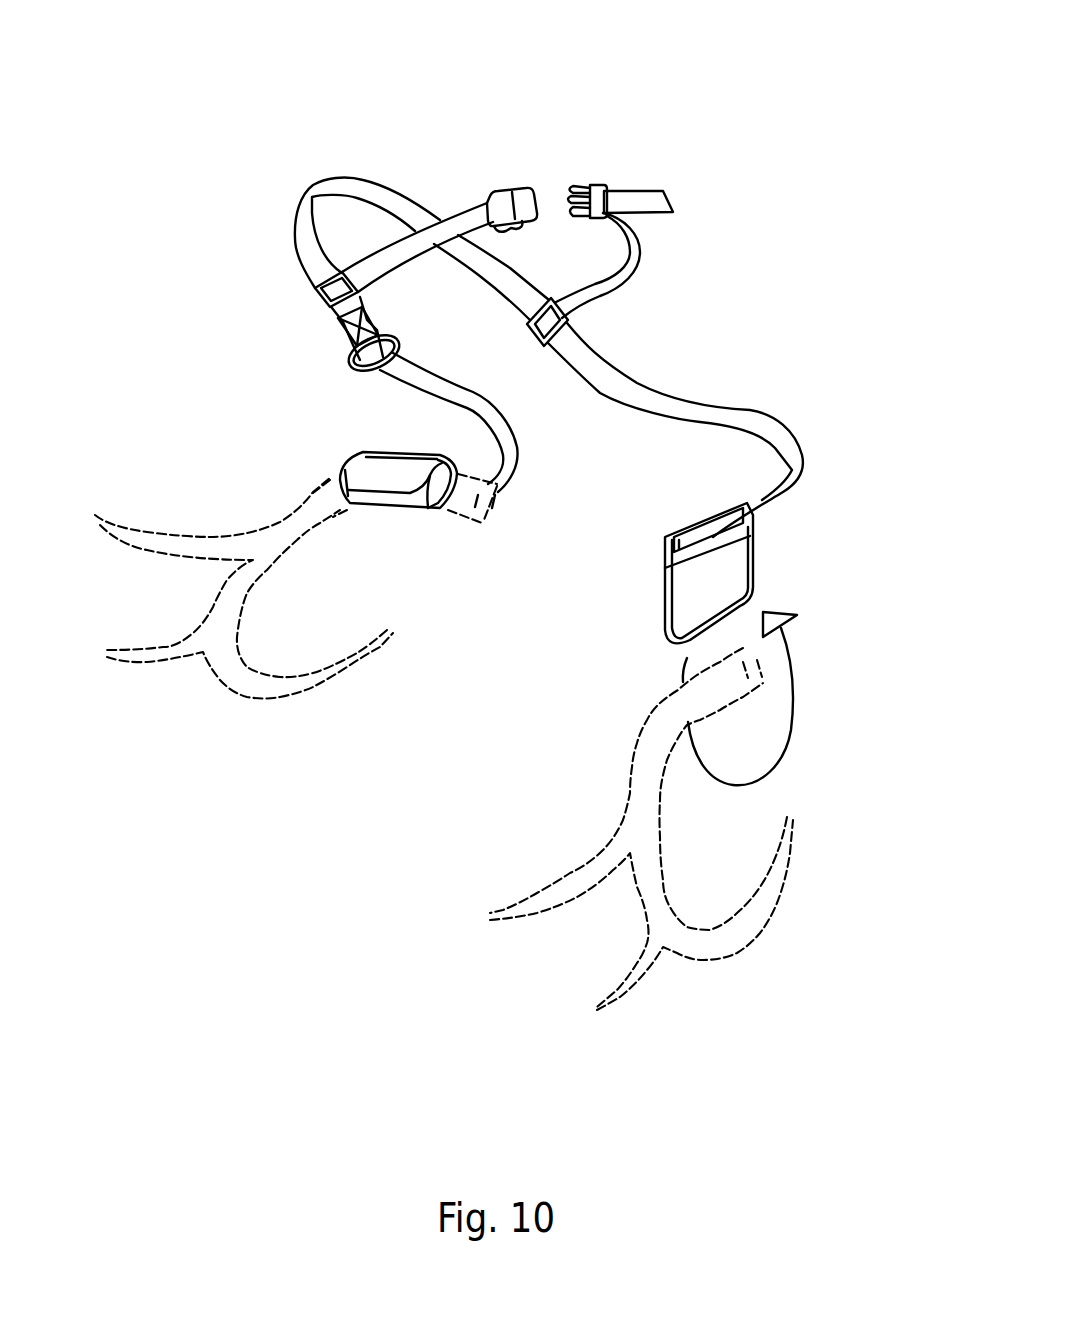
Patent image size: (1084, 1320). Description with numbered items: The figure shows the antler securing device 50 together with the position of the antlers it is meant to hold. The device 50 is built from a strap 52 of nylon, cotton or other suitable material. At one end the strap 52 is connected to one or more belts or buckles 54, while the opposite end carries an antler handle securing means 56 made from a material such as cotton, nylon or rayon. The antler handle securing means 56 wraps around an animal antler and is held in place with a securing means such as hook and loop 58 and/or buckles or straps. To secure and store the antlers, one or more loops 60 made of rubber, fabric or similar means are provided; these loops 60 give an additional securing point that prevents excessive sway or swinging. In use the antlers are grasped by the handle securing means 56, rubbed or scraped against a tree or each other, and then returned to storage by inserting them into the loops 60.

The antler securing device 50 is at (297, 112).
The strap 52 is at (480, 408).
The buckles 54 is at (507, 207).
The antler handle securing means 56 is at (383, 472).
The hook and loop 58 is at (713, 528).
The loops 60 is at (347, 343).